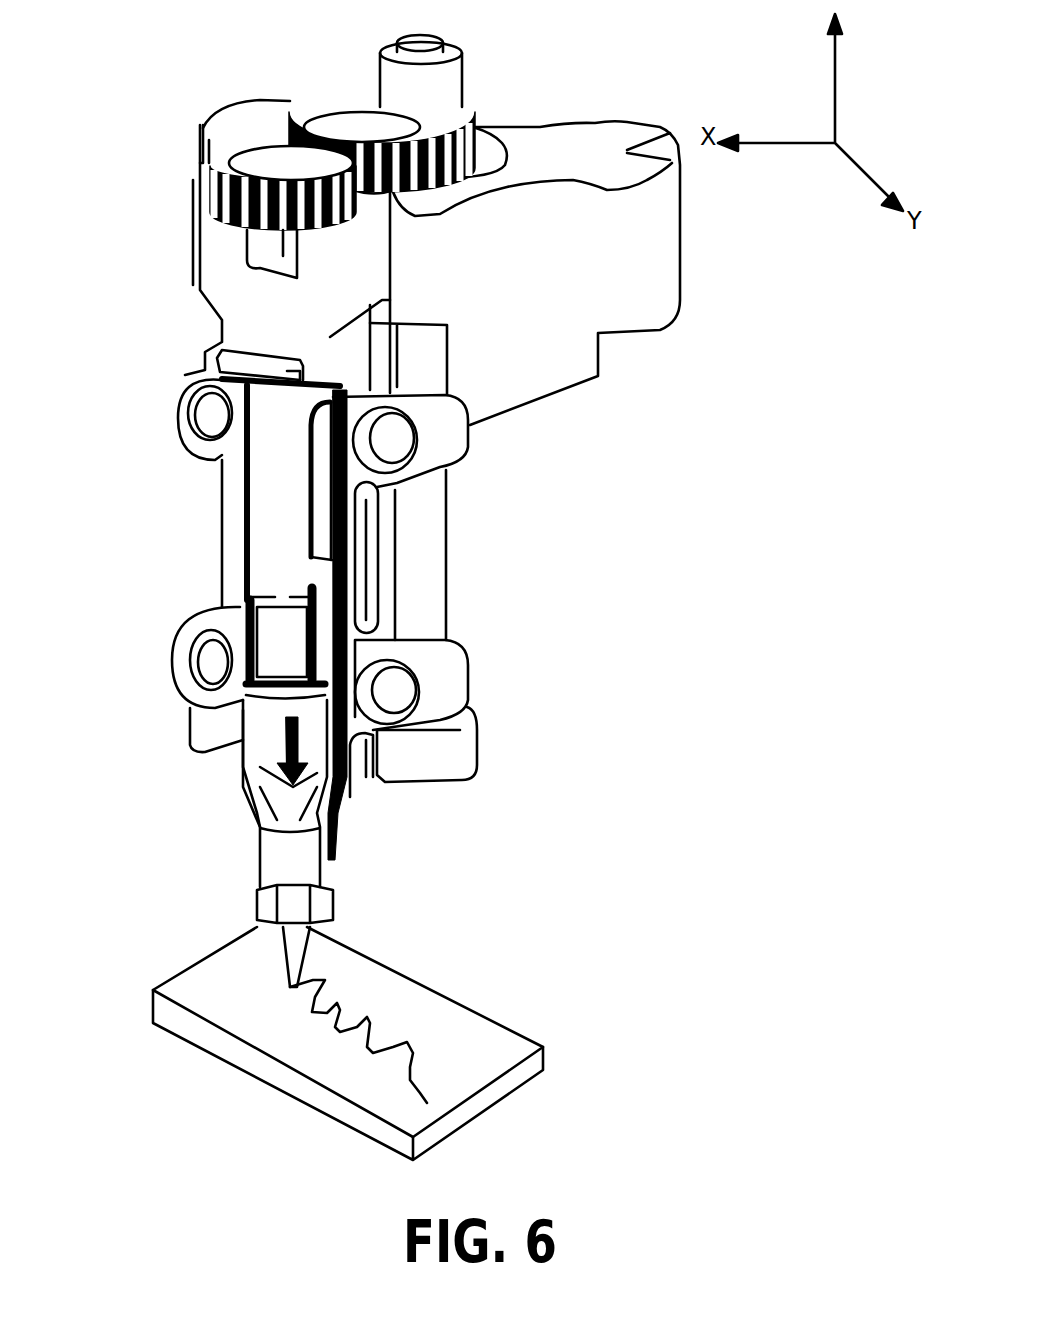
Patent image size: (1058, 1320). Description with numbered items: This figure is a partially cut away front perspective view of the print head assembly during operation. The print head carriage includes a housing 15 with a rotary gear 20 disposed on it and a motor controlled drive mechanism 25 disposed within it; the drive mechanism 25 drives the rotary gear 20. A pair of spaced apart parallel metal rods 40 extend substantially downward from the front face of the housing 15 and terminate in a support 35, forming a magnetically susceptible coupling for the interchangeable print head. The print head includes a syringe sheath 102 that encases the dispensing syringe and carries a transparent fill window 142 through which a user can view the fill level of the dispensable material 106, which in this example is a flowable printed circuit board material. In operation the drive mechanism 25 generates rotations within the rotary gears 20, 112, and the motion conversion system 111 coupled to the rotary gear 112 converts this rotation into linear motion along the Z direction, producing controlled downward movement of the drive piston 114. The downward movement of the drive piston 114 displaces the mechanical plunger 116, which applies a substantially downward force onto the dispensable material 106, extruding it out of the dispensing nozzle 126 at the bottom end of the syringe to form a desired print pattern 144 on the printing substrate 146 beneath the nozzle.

The housing 15 is at (537, 343).
The rotary gear 20 is at (363, 120).
The motor controlled drive mechanism 25 is at (440, 40).
The rotary gear 112 is at (283, 167).
The syringe sheath 102 is at (235, 487).
The motion conversion system 111 is at (270, 530).
The transparent fill window 142 is at (380, 542).
The drive piston 114 is at (290, 623).
The metal rods 40 is at (427, 560).
The mechanical plunger 116 is at (263, 737).
The dispensable material 106 is at (307, 793).
The support 35 is at (433, 750).
The dispensing nozzle 126 is at (293, 933).
The print pattern 144 is at (343, 1000).
The printing substrate 146 is at (470, 1047).